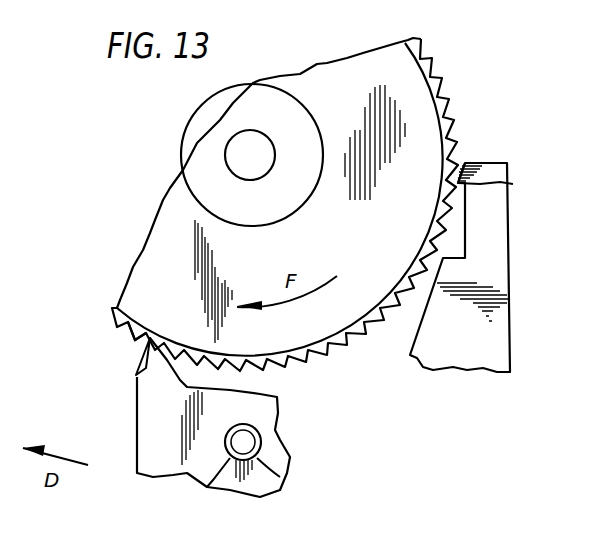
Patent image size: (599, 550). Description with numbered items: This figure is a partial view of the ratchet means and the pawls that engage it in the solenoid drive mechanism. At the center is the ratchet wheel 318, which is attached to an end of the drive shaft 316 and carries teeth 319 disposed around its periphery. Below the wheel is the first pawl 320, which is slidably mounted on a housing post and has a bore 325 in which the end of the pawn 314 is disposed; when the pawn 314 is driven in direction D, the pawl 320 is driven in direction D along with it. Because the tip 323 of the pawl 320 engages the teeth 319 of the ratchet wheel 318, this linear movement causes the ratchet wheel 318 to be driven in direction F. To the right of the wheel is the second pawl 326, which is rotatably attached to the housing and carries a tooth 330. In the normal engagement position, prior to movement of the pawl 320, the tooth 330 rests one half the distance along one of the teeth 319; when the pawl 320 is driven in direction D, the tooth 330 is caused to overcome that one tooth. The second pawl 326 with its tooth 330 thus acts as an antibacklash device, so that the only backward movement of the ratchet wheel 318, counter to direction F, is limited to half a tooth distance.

The pawn 314 is at (280, 477).
The drive shaft 316 is at (242, 157).
The ratchet wheel 318 is at (344, 77).
The teeth 319 is at (145, 338).
The first pawl 320 is at (279, 446).
The tip 323 is at (147, 368).
The bore 325 is at (207, 487).
The second pawl 326 is at (500, 323).
The tooth 330 is at (513, 184).